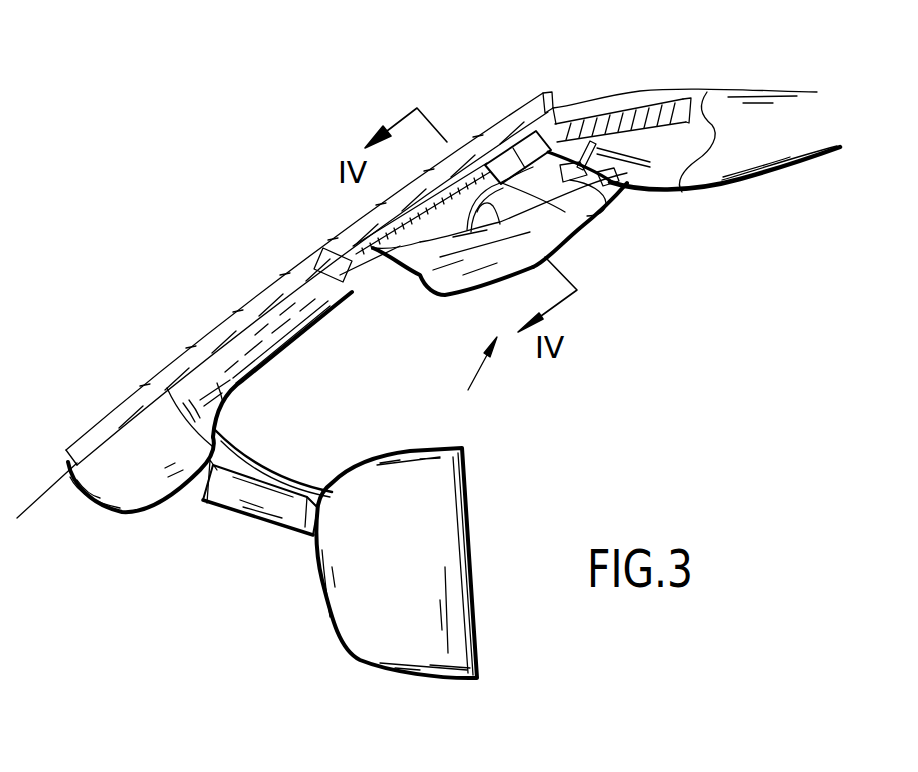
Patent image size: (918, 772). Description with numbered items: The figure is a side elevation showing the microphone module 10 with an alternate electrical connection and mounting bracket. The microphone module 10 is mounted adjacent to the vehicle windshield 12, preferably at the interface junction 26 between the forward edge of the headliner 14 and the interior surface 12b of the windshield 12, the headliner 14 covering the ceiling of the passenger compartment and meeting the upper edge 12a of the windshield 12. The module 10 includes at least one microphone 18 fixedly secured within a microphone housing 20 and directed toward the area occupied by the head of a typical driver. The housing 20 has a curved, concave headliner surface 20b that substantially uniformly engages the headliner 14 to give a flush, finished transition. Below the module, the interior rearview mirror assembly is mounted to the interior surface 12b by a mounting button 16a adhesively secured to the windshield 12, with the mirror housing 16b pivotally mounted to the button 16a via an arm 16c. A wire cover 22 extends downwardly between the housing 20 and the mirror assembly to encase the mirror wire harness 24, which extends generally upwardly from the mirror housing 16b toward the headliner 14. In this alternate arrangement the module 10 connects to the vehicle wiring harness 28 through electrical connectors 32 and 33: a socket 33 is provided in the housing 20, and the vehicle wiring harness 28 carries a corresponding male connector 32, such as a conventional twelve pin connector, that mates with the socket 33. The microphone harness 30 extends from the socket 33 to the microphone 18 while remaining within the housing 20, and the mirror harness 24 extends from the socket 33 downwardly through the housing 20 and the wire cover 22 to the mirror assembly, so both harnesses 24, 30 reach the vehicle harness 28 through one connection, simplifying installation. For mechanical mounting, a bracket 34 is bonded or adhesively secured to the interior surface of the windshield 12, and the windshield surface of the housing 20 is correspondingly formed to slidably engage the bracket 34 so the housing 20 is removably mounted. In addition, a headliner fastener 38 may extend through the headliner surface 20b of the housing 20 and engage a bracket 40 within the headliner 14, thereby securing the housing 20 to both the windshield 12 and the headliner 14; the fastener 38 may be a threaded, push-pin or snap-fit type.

The microphone module 10 is at (472, 380).
The windshield 12 is at (137, 393).
The upper edge 12a is at (550, 93).
The interior surface 12b is at (37, 507).
The headliner 14 is at (767, 143).
The mounting button 16a is at (135, 493).
The mirror housing 16b is at (433, 484).
The arm 16c is at (277, 513).
The microphone 18 is at (460, 290).
The microphone housing 20 is at (580, 223).
The headliner surface 20b is at (633, 190).
The wire cover 22 is at (317, 308).
The mirror wire harness 24 is at (323, 248).
The interface junction 26 is at (575, 110).
The vehicle wiring harness 28 is at (663, 117).
The microphone harness 30 is at (498, 224).
The electrical connector 32 is at (600, 200).
The socket 33 is at (583, 220).
The bracket 34 is at (472, 162).
The headliner fastener 38 is at (657, 187).
The bracket 40 is at (637, 157).